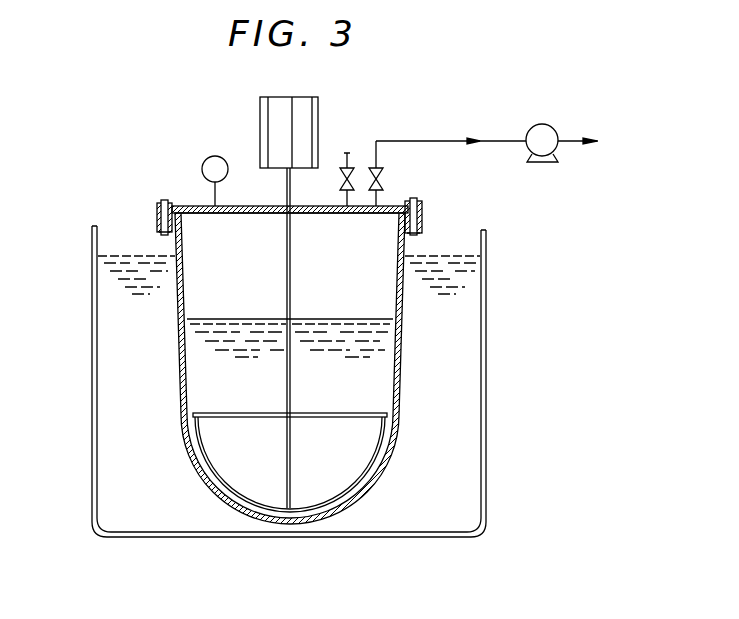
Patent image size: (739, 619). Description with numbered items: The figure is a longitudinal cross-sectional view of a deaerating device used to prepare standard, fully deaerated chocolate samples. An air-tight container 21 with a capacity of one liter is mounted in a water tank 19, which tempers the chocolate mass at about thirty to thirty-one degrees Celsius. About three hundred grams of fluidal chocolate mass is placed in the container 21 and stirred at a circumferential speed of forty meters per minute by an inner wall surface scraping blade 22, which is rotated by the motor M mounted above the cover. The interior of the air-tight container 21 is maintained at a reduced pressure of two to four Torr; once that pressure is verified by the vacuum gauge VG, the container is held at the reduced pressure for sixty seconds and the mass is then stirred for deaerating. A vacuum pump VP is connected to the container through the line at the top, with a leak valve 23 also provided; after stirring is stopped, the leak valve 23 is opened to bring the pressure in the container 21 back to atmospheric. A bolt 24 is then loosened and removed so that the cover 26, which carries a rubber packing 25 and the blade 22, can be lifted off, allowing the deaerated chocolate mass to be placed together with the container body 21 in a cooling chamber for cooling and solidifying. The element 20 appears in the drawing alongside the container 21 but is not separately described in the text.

The water tank 19 is at (92, 331).
The inner reaction vessel 20 is at (205, 358).
The air-tight container 21 is at (187, 428).
The inner wall surface scraping blade 22 is at (243, 503).
The leak valve 23 is at (352, 178).
The bolt 24 is at (158, 238).
The rubber packing 25 is at (160, 212).
The lid 26 is at (398, 205).
The motor M is at (319, 112).
The vacuum gauge VG is at (213, 157).
The vacuum pump VP is at (543, 124).